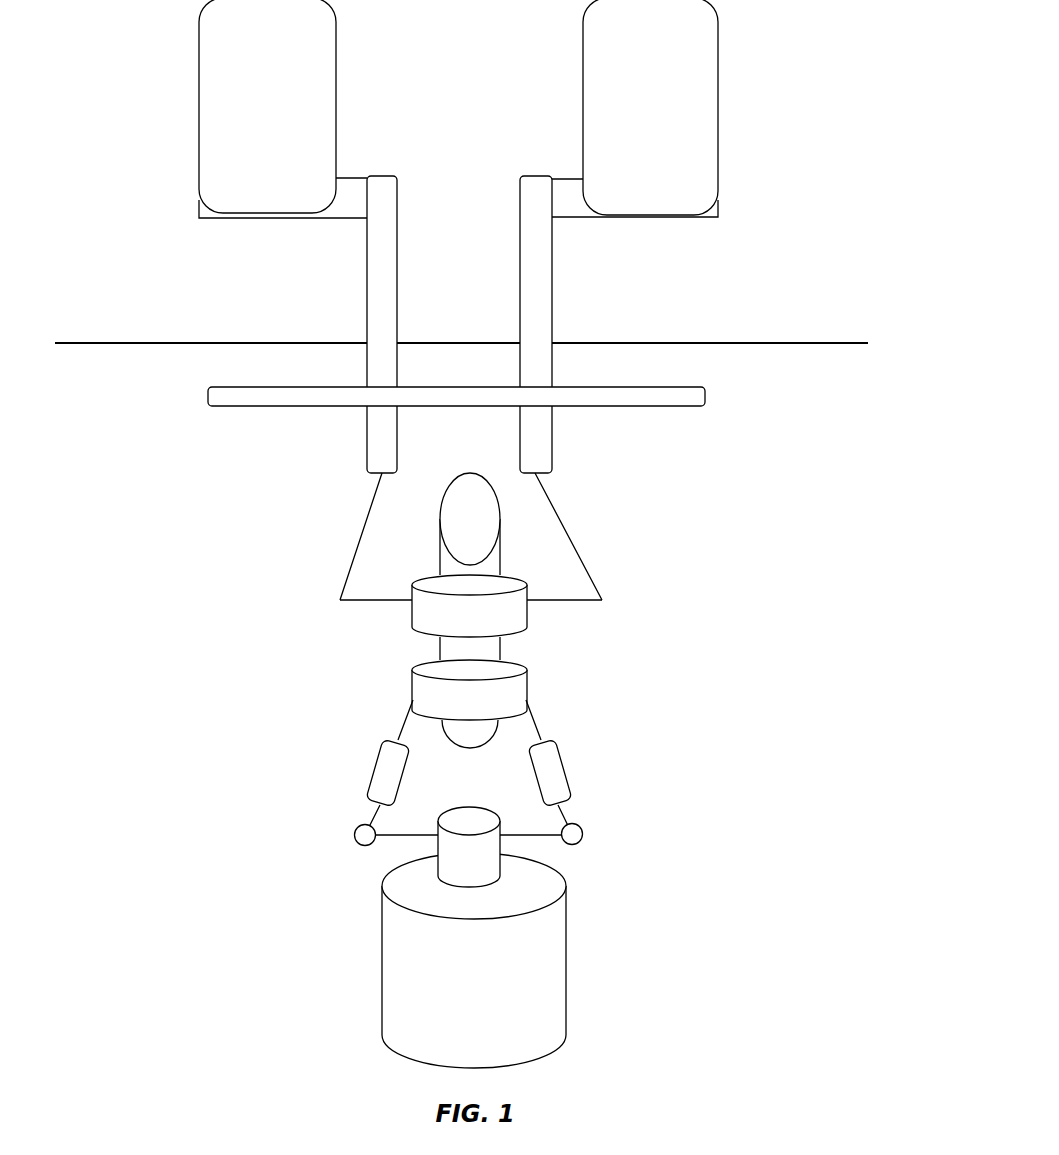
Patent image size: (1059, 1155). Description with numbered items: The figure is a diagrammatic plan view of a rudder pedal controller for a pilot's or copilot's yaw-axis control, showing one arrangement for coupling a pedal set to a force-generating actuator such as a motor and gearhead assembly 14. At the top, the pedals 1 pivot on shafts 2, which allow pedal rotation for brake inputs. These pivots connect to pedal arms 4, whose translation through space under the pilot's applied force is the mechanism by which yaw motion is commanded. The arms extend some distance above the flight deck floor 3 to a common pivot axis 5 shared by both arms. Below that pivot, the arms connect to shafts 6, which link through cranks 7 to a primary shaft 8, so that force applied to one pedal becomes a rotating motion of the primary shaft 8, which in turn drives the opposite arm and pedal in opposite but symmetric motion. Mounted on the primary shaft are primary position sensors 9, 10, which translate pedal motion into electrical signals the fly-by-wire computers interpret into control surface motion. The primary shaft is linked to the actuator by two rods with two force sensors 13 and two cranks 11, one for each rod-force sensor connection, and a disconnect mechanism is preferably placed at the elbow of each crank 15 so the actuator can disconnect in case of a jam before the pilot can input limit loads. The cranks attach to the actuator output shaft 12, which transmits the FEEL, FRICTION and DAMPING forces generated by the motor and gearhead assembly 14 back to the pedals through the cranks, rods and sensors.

The pedal 1 is at (259, 121).
The shaft 2 is at (355, 168).
The flight deck floor 3 is at (758, 328).
The pedal arm 4 is at (356, 311).
The common pivot axis 5 is at (717, 397).
The shaft 6 is at (341, 524).
The crank 7 is at (342, 613).
The primary shaft 8 is at (462, 532).
The primary position sensor 9 is at (462, 628).
The primary position sensor 10 is at (455, 711).
The crank 11 is at (393, 852).
The actuator output shaft 12 is at (454, 872).
The force sensor 13 is at (360, 765).
The motor and gearhead assembly 14 is at (459, 995).
The crank elbow 15 is at (352, 845).